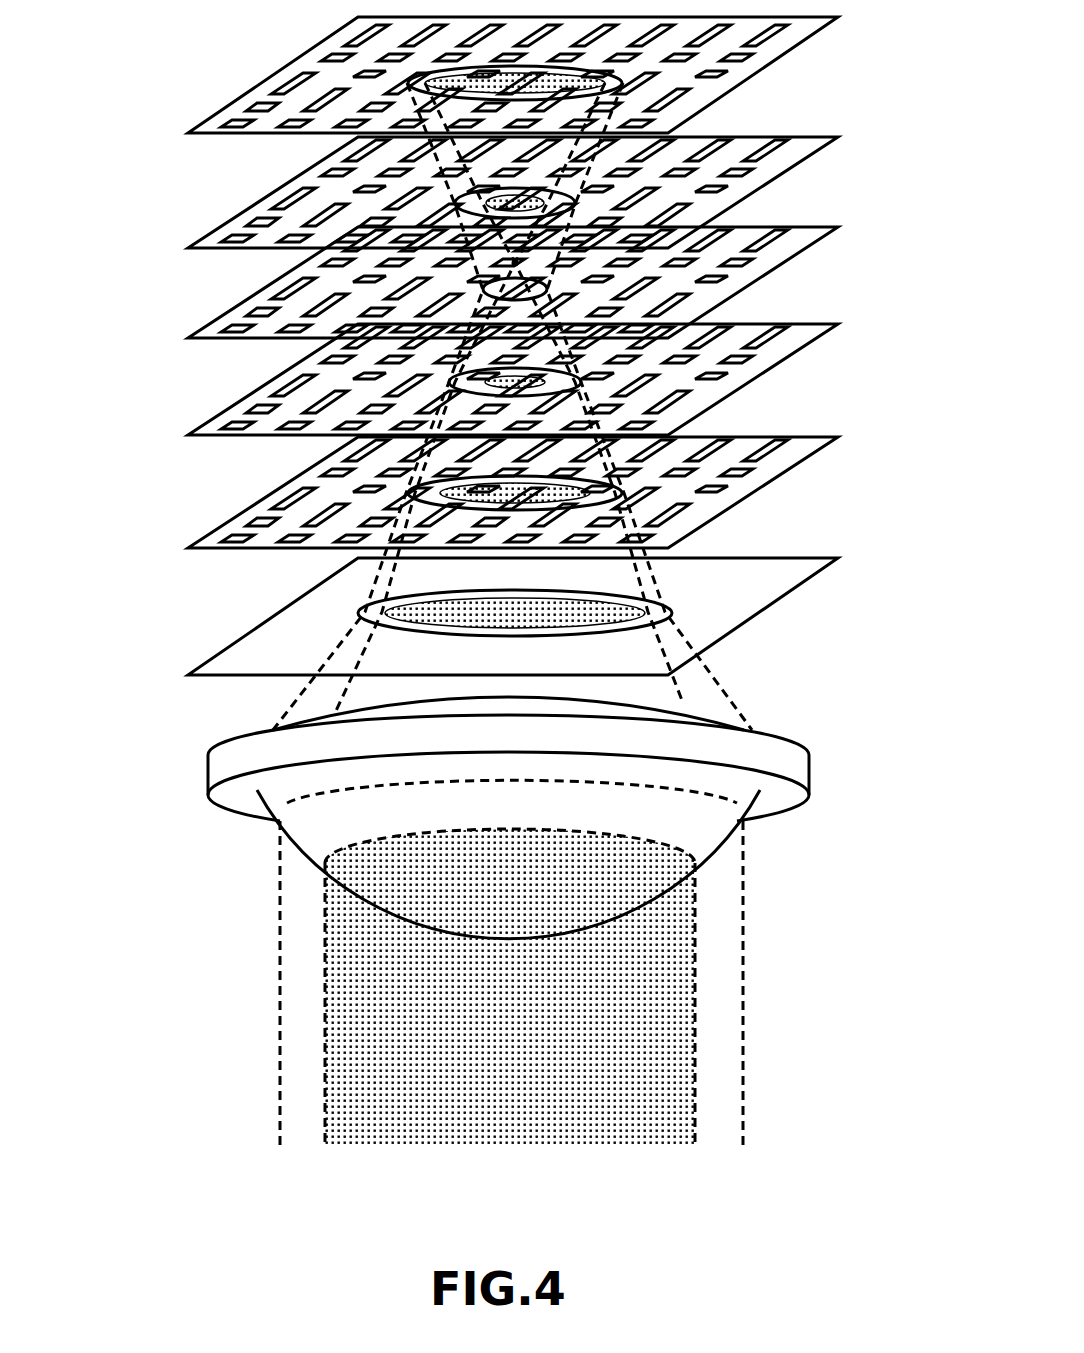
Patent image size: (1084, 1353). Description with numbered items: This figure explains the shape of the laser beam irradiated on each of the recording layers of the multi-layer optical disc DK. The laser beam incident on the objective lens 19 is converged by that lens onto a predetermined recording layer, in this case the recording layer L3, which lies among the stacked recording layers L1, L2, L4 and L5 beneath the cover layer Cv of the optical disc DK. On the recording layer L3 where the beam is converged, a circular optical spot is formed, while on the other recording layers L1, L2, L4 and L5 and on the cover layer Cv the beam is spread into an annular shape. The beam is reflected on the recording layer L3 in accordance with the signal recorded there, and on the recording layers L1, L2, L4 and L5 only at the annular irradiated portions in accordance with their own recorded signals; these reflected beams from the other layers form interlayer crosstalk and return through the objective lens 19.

The optical disc DK is at (483, 282).
The recording layer L1 is at (777, 458).
The recording layer L2 is at (777, 345).
The recording layer L3 is at (777, 245).
The recording layer L4 is at (777, 157).
The recording layer L5 is at (777, 38).
The cover layer Cv is at (777, 575).
The objective lens 19 is at (318, 848).